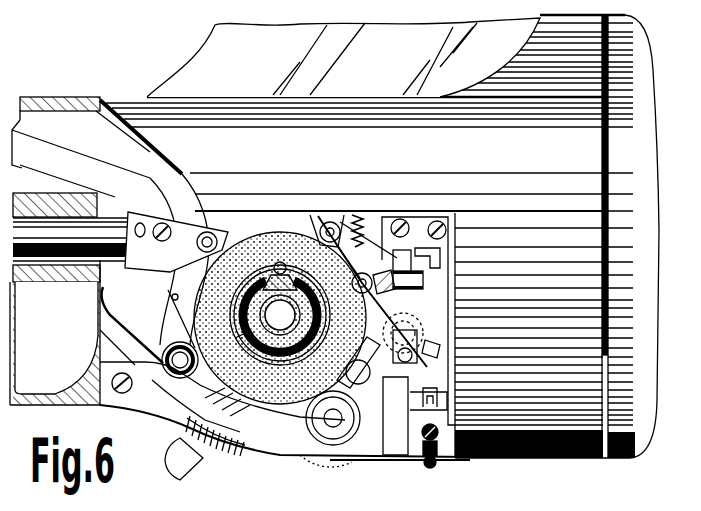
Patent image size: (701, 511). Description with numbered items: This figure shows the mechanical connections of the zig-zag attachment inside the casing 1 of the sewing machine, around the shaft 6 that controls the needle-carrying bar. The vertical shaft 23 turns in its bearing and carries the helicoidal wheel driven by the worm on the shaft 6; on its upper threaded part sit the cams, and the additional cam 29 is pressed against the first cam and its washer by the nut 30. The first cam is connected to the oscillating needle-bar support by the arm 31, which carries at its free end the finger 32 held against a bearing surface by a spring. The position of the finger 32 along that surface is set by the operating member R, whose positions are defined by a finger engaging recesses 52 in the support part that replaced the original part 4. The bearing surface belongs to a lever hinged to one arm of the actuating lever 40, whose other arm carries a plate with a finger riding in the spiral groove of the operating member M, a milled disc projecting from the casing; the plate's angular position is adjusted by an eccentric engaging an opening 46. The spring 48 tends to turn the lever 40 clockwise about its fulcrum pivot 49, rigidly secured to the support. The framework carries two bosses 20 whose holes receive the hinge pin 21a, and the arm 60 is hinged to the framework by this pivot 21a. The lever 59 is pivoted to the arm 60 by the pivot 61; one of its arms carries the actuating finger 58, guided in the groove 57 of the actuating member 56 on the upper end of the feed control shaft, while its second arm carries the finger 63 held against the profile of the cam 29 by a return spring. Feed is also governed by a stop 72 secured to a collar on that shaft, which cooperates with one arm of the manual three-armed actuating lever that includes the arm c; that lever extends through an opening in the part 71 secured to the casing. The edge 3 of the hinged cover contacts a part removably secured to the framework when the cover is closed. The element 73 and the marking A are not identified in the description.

The casing 1 is at (60, 98).
The arm 31 is at (81, 158).
The shaft 6 is at (116, 226).
The finger 32 is at (176, 242).
The spring 48 is at (120, 320).
The fulcrum pivot 49 is at (176, 319).
The actuating lever 40 is at (190, 371).
The recesses 52 is at (228, 455).
The operating member R is at (184, 459).
The cam 29 is at (250, 250).
The vertical shaft 23 is at (280, 315).
The nut 30 is at (254, 309).
The bosses 20 is at (312, 232).
The hinge pin 21a is at (336, 222).
The finger 63 is at (369, 231).
The part 71 is at (418, 318).
The lever 59 is at (372, 291).
The pivot 61 is at (352, 284).
The arm 60 is at (401, 258).
The bracket 73 is at (428, 268).
The arm c is at (429, 263).
The actuating member 56 is at (391, 290).
The guide groove 57 is at (411, 290).
The actuating finger 58 is at (415, 332).
The stop 72 is at (436, 343).
The opening 46 is at (288, 456).
The operating member M is at (352, 470).
The edge 3 is at (395, 416).
The part 4 is at (415, 401).
The base A is at (400, 446).